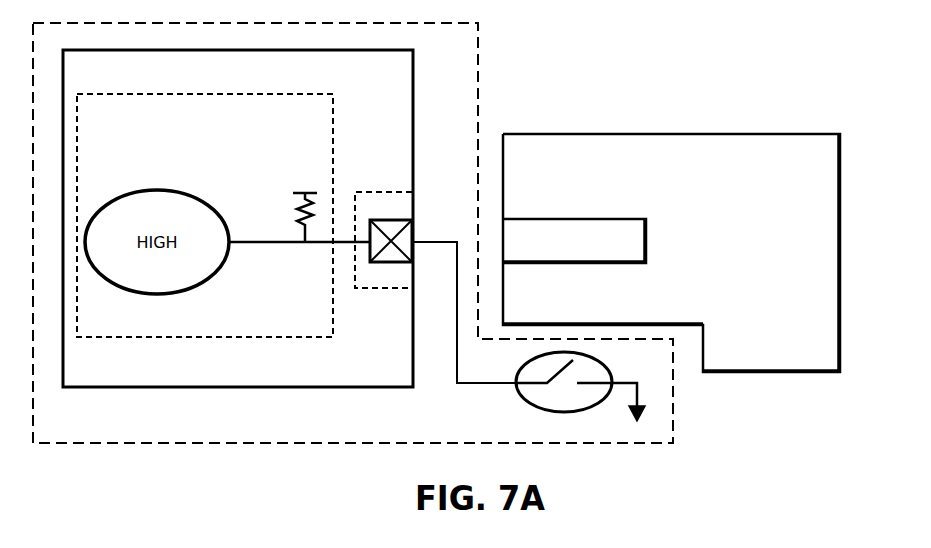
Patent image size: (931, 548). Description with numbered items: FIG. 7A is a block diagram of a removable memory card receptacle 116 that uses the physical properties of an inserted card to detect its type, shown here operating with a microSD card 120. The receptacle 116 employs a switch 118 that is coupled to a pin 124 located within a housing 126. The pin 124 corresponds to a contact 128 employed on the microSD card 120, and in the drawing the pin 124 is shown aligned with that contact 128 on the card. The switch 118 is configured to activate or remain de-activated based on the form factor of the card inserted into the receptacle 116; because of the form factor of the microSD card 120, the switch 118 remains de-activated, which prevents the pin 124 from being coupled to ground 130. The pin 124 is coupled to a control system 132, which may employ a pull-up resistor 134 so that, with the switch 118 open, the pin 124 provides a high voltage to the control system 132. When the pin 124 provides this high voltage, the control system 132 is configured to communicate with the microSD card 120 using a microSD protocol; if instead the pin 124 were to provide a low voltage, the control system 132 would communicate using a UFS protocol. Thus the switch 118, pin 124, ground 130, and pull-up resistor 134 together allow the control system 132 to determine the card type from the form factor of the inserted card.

The removable memory card receptacle 116 is at (478, 38).
The switch 118 is at (525, 392).
The microSD card 120 is at (812, 134).
The pin 124 is at (385, 218).
The housing 126 is at (375, 290).
The contact 128 is at (647, 240).
The ground 130 is at (643, 418).
The control system 132 is at (333, 108).
The pull-up resistor 134 is at (300, 204).